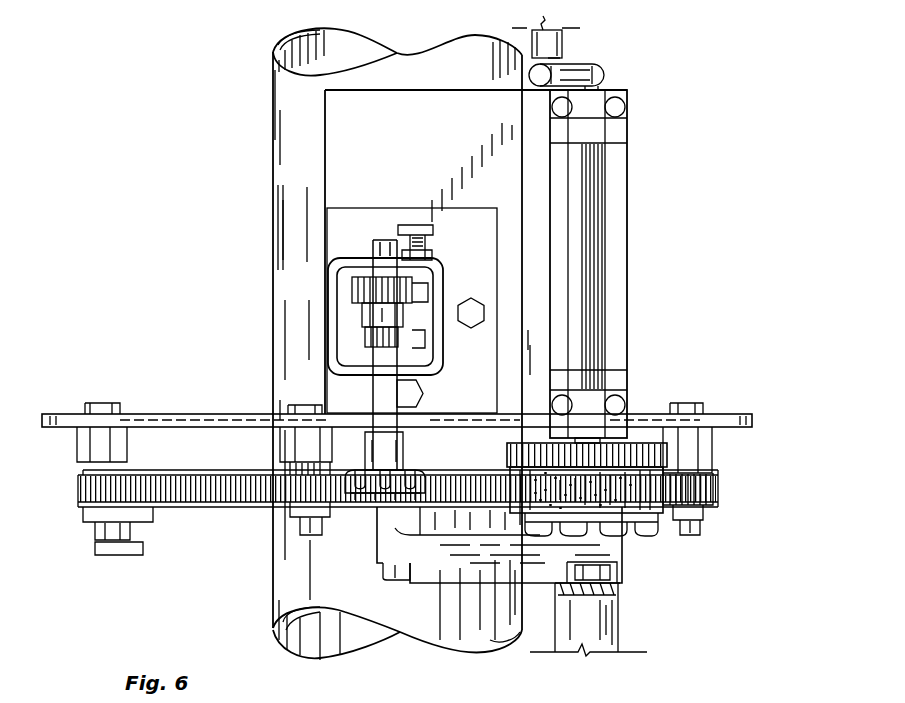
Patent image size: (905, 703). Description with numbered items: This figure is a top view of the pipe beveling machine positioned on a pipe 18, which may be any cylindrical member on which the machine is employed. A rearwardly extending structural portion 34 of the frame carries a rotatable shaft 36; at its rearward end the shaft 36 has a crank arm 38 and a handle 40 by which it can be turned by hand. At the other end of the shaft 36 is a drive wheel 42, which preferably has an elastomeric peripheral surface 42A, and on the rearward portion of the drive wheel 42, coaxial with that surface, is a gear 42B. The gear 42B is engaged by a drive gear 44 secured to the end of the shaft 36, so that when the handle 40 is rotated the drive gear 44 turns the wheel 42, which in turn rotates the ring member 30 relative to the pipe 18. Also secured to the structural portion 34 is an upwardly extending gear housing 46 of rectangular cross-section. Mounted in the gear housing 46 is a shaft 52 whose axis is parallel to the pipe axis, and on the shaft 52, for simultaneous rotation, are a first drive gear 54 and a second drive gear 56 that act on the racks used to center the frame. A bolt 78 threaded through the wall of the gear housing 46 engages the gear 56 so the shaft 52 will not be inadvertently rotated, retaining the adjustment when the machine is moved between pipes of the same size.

The pipe 18 is at (288, 232).
The ring member 30 is at (205, 507).
The structural portion 34 is at (345, 151).
The shaft 36 is at (600, 268).
The crank arm 38 is at (590, 70).
The handle 40 is at (545, 42).
The drive wheel 42 is at (651, 513).
The elastomeric peripheral surface 42A is at (600, 490).
The gear 42B is at (668, 453).
The drive gear 44 is at (603, 463).
The gear housing 46 is at (433, 276).
The shaft 52 is at (383, 395).
The first drive gear 54 is at (378, 340).
The second drive gear 56 is at (363, 285).
The bolt 78 is at (428, 230).